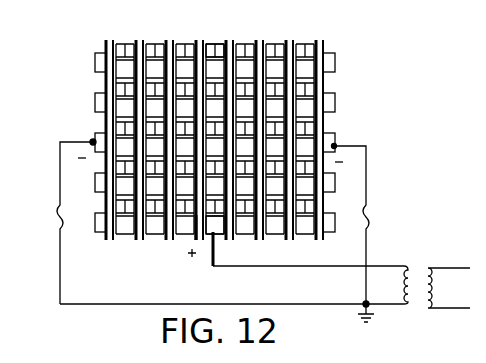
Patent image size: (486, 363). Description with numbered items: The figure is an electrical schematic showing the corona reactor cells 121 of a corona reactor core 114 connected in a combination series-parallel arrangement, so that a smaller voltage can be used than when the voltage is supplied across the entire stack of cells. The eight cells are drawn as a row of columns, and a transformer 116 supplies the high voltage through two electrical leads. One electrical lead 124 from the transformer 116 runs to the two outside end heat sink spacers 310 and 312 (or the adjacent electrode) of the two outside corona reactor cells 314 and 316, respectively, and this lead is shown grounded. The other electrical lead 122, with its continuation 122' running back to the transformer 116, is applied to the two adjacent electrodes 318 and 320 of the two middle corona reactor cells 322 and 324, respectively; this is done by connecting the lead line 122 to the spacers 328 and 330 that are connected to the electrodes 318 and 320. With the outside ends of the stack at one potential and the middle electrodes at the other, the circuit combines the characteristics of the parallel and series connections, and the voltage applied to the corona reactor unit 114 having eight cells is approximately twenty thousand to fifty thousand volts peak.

The corona reactor core 114 is at (372, 85).
The transformer 116 is at (413, 272).
The corona reactor cells 121 is at (318, 42).
The electrical lead 122 is at (254, 280).
The electrical lead 122' is at (352, 278).
The electrical lead 124 is at (232, 320).
The heat sink spacer 310 is at (95, 100).
The heat sink spacer 312 is at (337, 107).
The corona reactor cell 314 is at (108, 38).
The corona reactor cell 316 is at (323, 57).
The electrode 318 is at (208, 246).
The electrode 320 is at (217, 228).
The corona reactor cell 322 is at (197, 226).
The corona reactor cell 324 is at (230, 228).
The spacer 328 is at (210, 50).
The spacer 330 is at (218, 52).